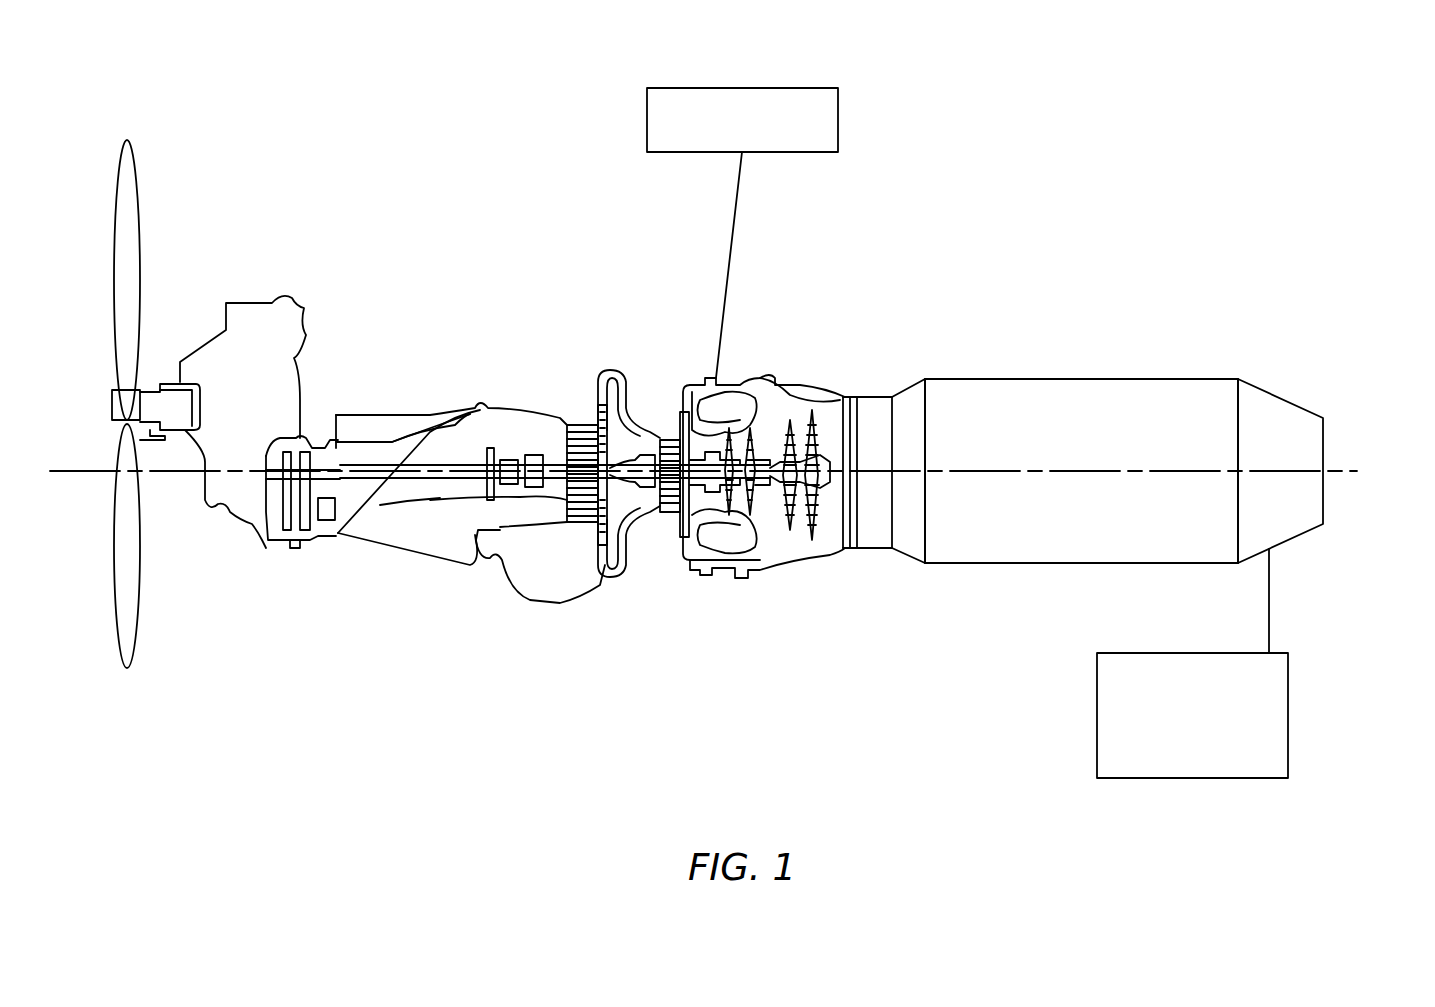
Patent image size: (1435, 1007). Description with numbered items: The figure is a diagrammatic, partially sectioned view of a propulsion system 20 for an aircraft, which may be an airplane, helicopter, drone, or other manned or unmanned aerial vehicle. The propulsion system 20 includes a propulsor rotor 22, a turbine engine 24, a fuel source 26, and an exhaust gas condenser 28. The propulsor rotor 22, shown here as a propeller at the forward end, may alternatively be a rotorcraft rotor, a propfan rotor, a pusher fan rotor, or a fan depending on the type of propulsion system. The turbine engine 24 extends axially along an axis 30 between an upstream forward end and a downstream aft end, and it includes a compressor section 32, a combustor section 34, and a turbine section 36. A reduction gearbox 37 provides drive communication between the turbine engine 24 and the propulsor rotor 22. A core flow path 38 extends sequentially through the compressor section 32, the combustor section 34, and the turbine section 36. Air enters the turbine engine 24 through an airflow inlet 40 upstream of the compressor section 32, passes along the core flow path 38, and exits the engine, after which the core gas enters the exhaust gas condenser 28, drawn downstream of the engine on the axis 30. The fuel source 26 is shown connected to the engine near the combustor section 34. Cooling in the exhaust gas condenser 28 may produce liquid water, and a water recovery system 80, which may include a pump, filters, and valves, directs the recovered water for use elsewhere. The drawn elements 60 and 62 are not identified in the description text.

The propulsion system 20 is at (963, 133).
The propulsor rotor 22 is at (180, 147).
The turbine engine 24 is at (570, 237).
The fuel source 26 is at (753, 88).
The exhaust gas condenser 28 is at (1128, 290).
The axis 30 is at (1355, 470).
The compressor section 32 is at (612, 340).
The combustor section 34 is at (718, 573).
The turbine section 36 is at (802, 378).
The reduction gearbox 37 is at (280, 553).
The core flow path 38 is at (832, 533).
The airflow inlet 40 is at (405, 555).
The condenser 60 is at (997, 573).
The condenser housing 62 is at (1015, 358).
The water recovery system 80 is at (1288, 707).